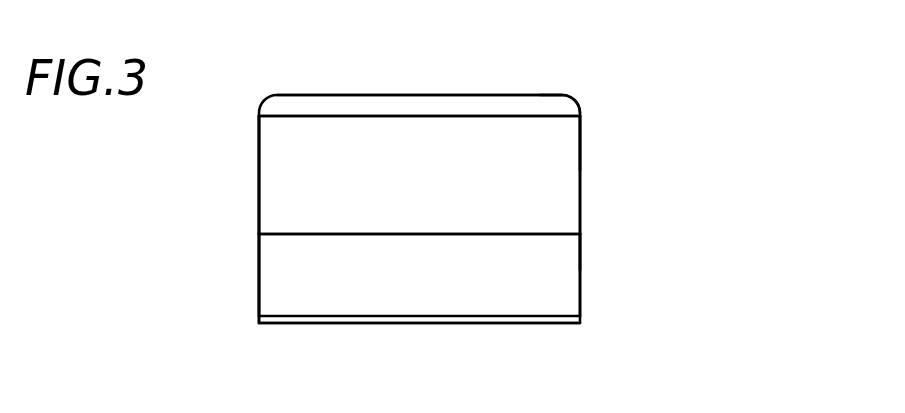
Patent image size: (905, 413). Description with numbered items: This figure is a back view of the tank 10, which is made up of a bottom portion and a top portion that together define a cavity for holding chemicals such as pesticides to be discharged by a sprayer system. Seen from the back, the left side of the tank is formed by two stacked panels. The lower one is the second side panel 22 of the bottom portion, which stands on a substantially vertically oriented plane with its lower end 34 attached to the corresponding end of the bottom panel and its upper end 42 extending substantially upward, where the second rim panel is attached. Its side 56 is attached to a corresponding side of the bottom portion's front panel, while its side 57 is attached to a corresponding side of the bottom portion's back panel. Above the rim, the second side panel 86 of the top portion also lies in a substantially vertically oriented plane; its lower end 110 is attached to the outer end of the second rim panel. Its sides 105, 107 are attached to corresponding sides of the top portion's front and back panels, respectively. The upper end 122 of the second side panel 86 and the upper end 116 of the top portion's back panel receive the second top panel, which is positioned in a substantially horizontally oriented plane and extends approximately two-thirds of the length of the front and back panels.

The tank 10 is at (745, 117).
The upper end of second side panel 122 is at (568, 102).
The upper end of back panel 116 is at (550, 116).
The side of second side panel 105 is at (580, 158).
The second side panel 86 is at (546, 171).
The side of second side panel 107 is at (259, 174).
The lower end of second side panel 110 is at (550, 234).
The upper end of second side panel 42 is at (550, 234).
The second side panel 22 is at (546, 268).
The side of second side panel 57 is at (259, 268).
The side of second side panel 56 is at (580, 302).
The lower end of second side panel 34 is at (580, 323).